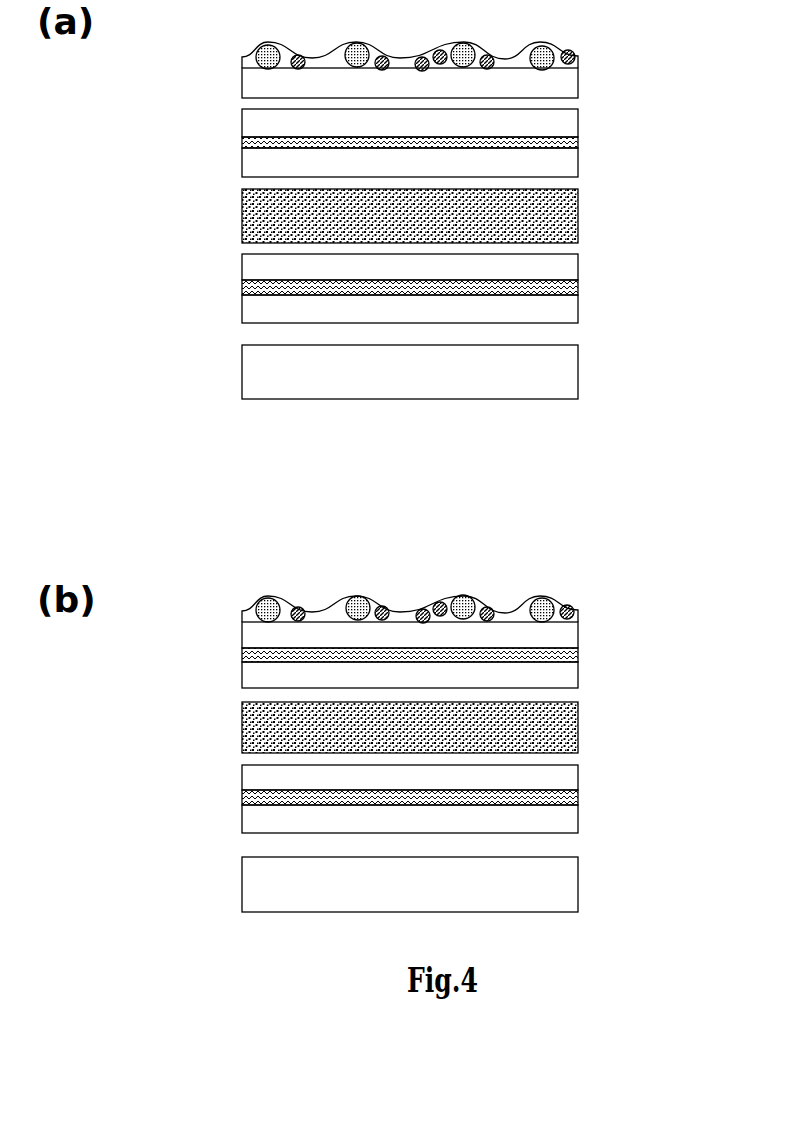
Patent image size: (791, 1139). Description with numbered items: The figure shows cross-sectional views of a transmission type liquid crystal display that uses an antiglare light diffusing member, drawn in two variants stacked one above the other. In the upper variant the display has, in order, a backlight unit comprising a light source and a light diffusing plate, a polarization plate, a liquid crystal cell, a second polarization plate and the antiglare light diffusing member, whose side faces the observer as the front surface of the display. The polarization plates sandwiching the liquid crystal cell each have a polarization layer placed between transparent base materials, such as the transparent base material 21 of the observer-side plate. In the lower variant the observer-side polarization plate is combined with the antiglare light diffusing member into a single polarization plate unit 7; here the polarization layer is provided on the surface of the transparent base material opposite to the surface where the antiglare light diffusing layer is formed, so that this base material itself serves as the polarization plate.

The transparent base material 21 is at (253, 123).
The polarization plate unit 7 is at (432, 653).